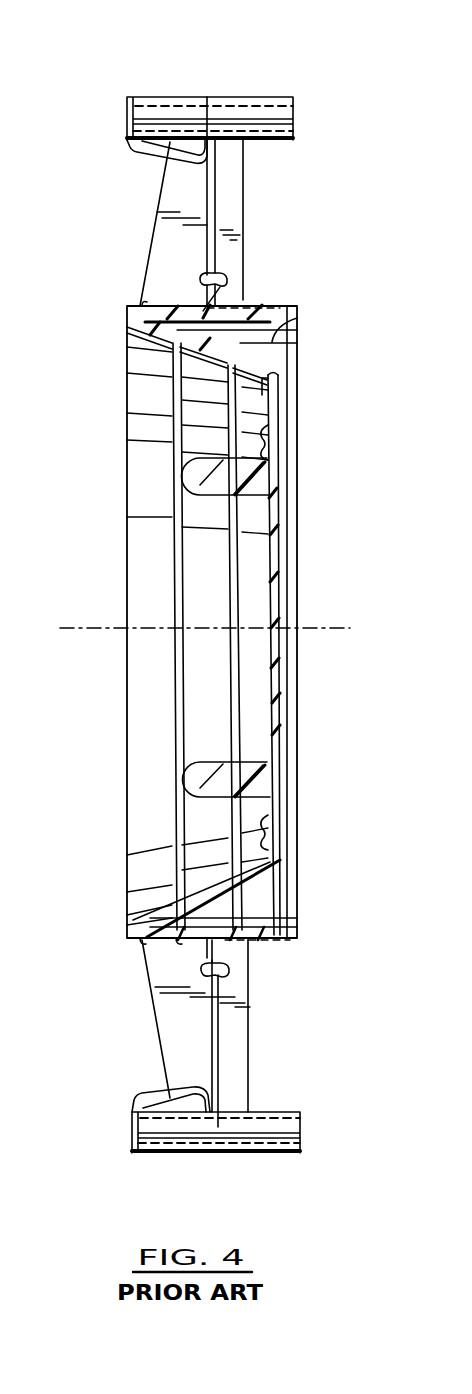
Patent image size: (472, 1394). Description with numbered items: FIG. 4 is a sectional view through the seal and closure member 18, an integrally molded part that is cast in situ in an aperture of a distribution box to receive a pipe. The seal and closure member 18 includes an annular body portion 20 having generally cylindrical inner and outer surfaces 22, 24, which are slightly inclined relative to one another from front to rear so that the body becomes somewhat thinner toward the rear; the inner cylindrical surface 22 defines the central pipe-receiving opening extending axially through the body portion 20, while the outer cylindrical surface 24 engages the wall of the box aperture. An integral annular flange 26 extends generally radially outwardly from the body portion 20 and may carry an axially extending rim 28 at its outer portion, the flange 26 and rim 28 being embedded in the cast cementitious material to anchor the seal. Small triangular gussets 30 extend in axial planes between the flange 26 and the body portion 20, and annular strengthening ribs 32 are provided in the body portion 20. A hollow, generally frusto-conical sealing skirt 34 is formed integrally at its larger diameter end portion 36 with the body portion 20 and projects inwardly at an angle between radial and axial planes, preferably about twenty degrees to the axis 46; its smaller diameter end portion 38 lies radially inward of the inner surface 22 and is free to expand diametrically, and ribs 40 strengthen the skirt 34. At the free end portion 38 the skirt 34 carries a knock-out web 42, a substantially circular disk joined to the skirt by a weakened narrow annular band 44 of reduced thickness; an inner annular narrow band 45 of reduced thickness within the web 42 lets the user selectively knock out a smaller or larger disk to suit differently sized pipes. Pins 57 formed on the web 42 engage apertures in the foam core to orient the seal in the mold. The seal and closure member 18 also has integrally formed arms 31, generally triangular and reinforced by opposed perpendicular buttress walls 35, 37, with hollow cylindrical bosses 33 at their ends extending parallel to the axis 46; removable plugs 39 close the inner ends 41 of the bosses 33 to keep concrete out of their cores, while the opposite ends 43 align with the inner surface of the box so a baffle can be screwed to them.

The seal end closure member 18 is at (122, 390).
The annular body portion 20 is at (183, 302).
The inner cylindrical surface 22 is at (270, 322).
The outer cylindrical surface 24 is at (157, 303).
The annular flange 26 is at (207, 955).
The rim 28 is at (215, 272).
The gusset 30 is at (250, 305).
The arm 31 is at (217, 177).
The annular strengthening rib 32 is at (142, 943).
The hollow cylindrical boss 33 is at (250, 97).
The sealing skirt 34 is at (272, 368).
The buttress wall 35 is at (170, 207).
The larger diameter end portion 36 is at (132, 920).
The buttress wall 37 is at (237, 200).
The smaller diameter end portion 38 is at (268, 868).
The removable plug 39 is at (128, 115).
The annular strengthening rib 40 is at (175, 533).
The inner end of boss 41 is at (150, 112).
The knock-out web 42 is at (273, 580).
The opposite end of boss 43 is at (283, 118).
The weakened narrow annular band 44 is at (265, 858).
The inner annular narrow band 45 is at (263, 447).
The axis 46 is at (107, 632).
The pin 57 is at (202, 472).